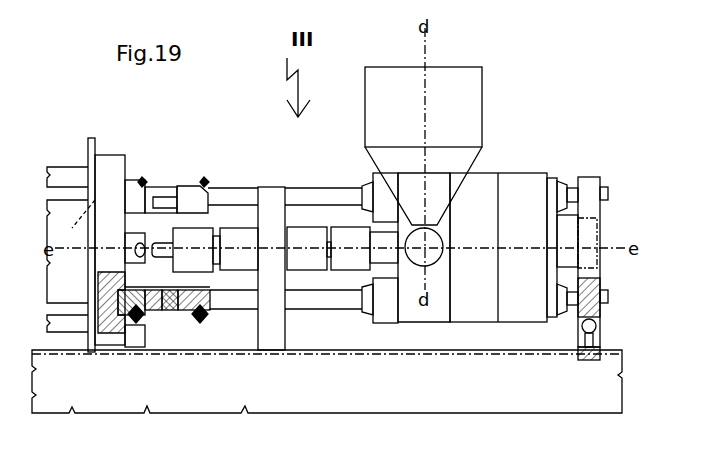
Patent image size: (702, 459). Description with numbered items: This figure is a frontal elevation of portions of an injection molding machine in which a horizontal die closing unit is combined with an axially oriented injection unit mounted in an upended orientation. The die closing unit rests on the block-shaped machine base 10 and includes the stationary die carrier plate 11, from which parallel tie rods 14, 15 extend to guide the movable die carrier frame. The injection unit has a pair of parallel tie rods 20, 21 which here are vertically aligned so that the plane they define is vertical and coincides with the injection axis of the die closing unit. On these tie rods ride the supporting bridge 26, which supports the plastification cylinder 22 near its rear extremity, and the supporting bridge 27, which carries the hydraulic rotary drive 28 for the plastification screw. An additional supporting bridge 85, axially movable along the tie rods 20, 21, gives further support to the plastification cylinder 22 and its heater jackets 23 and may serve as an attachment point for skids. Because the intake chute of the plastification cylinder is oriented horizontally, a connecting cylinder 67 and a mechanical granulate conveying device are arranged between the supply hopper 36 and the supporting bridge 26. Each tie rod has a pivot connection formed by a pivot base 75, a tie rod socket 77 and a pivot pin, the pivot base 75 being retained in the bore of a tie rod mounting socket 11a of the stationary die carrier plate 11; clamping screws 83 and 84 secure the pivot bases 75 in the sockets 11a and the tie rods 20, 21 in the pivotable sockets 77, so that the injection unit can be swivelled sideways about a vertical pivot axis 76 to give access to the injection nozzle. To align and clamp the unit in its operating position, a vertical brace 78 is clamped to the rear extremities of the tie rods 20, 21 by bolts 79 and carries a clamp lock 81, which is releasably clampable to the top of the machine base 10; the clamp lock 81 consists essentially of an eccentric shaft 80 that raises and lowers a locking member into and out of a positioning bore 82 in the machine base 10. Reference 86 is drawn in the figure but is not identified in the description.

The machine base 10 is at (112, 395).
The stationary die carrier plate 11 is at (112, 170).
The tie rod mounting socket 11a is at (132, 182).
The tie rod 14 is at (66, 175).
The tie rod 15 is at (72, 323).
The injection unit tie rod 20 is at (312, 195).
The injection unit tie rod 21 is at (327, 298).
The plastification cylinder 22 is at (325, 247).
The heater jackets 23 is at (343, 237).
The supporting bridge 26 is at (403, 302).
The supporting bridge 27 is at (510, 302).
The hydraulic rotary drive 28 is at (565, 240).
The supply hopper 36 is at (460, 107).
The connecting cylinder 67 is at (430, 247).
The pivot base 75 is at (163, 193).
The vertical pivot axis 76 is at (163, 315).
The tie rod socket 77 is at (185, 193).
The vertical brace 78 is at (590, 187).
The bolts 79 is at (605, 290).
The eccentric shaft 80 is at (597, 326).
The clamp lock 81 is at (603, 350).
The positioning bore 82 is at (582, 353).
The clamping screw 83 is at (143, 180).
The clamping screw 84 is at (207, 182).
The supporting bridge 85 is at (272, 247).
The platen wall section 86 is at (96, 207).